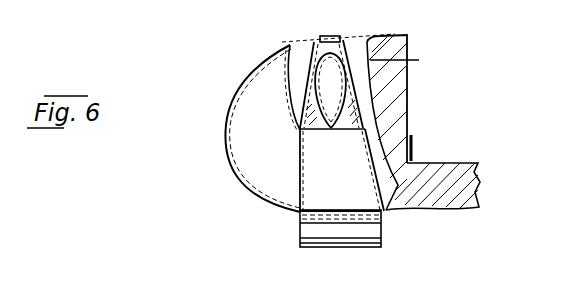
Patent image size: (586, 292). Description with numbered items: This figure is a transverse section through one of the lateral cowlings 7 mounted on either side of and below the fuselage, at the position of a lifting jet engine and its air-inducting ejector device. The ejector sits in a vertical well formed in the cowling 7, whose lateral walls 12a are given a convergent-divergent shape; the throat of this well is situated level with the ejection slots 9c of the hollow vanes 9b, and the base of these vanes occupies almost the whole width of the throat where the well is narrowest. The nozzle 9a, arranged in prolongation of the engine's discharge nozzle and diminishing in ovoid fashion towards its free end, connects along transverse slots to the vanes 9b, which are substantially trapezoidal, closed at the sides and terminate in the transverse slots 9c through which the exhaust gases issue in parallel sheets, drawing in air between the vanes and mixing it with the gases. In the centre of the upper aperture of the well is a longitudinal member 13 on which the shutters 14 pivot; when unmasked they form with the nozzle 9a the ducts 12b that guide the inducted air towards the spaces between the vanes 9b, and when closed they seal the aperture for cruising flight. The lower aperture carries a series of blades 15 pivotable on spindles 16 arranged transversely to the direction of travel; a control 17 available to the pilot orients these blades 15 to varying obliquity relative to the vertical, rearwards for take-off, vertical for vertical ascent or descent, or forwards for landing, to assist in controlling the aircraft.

The lateral cowling 7 is at (226, 124).
The nozzle 9a is at (338, 88).
The hollow vane 9b is at (350, 116).
The slot 9c is at (300, 143).
The lateral wall 12a is at (287, 102).
The duct 12b is at (289, 46).
The longitudinal member 13 is at (331, 36).
The shutter 14 is at (298, 70).
The blade 15 is at (308, 237).
The spindle 16 is at (334, 210).
The control 17 is at (404, 188).